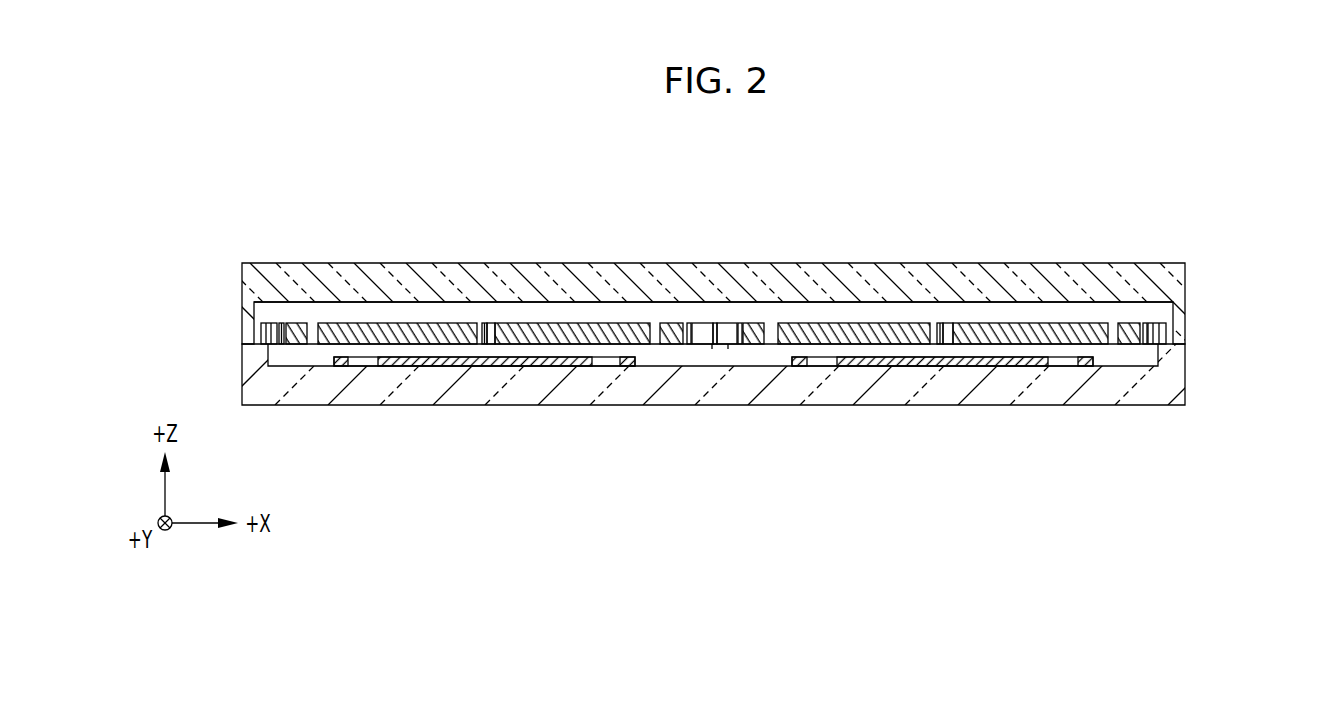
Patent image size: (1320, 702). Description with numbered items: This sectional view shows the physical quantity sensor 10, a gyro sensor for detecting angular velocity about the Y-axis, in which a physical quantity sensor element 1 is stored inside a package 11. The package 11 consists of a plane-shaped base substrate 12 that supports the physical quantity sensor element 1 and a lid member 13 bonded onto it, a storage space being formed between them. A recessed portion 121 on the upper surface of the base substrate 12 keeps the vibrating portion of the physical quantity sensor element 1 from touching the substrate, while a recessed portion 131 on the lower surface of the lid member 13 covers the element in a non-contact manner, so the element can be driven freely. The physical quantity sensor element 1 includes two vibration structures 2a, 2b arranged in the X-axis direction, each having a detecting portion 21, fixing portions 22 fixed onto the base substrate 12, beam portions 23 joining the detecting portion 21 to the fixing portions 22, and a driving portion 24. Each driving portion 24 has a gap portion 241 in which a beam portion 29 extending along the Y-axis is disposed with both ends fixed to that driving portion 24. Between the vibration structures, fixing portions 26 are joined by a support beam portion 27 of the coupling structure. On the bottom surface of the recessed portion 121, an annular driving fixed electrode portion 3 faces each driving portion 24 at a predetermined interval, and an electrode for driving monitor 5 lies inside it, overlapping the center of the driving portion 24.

The physical quantity sensor 10 is at (1175, 174).
The package 11 is at (1238, 278).
The base substrate 12 is at (1178, 378).
The recessed portion 121 is at (670, 367).
The lid member 13 is at (1178, 291).
The recessed portion 131 is at (838, 309).
The physical quantity sensor element 1 is at (713, 337).
The vibration structure 2a is at (713, 343).
The vibration structure 2b is at (1045, 306).
The detecting portion 21 is at (298, 328).
The fixing portion 22 is at (266, 324).
The beam portion 23 is at (281, 324).
The driving portion 24 is at (446, 324).
The gap portion 241 is at (493, 336).
The fixing portion 26 is at (728, 346).
The support beam portion 27 is at (712, 346).
The beam portion 29 is at (484, 343).
The driving fixed electrode portion 3 is at (628, 362).
The electrode for driving monitor 5 is at (548, 360).